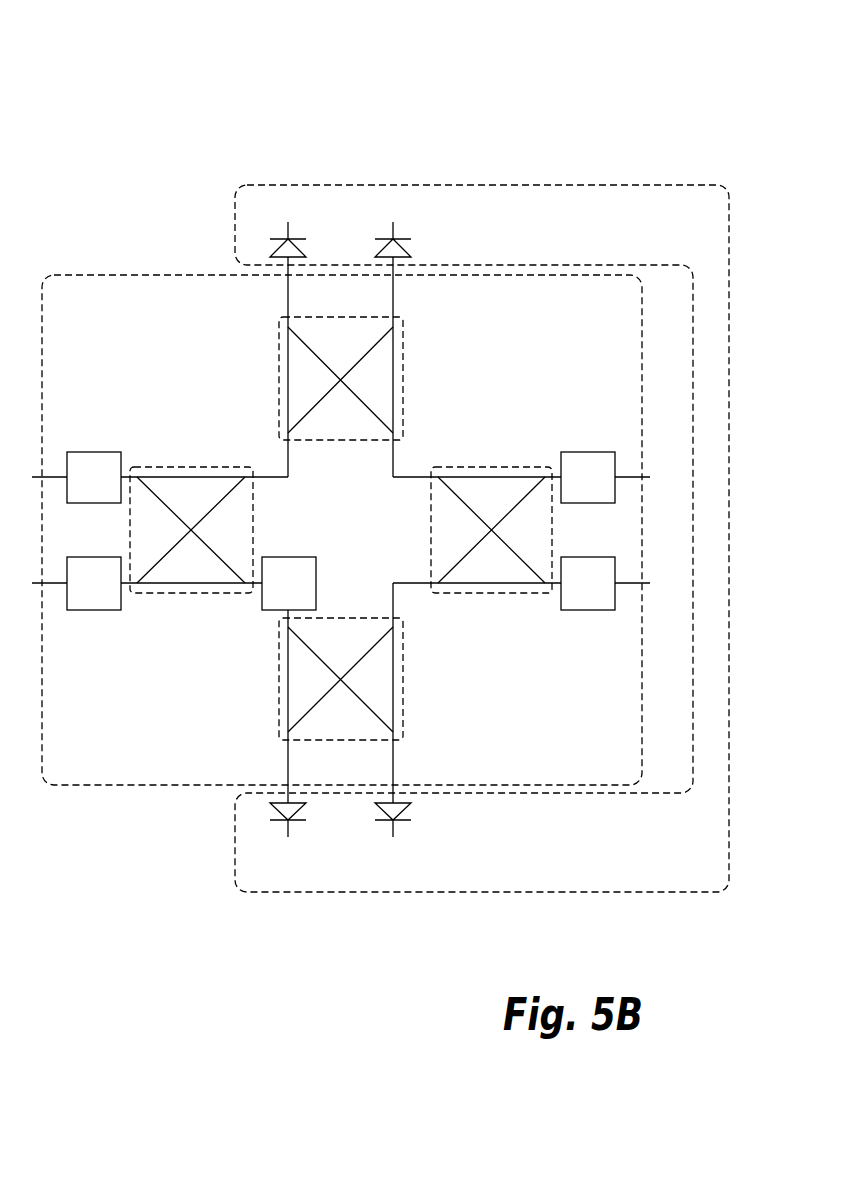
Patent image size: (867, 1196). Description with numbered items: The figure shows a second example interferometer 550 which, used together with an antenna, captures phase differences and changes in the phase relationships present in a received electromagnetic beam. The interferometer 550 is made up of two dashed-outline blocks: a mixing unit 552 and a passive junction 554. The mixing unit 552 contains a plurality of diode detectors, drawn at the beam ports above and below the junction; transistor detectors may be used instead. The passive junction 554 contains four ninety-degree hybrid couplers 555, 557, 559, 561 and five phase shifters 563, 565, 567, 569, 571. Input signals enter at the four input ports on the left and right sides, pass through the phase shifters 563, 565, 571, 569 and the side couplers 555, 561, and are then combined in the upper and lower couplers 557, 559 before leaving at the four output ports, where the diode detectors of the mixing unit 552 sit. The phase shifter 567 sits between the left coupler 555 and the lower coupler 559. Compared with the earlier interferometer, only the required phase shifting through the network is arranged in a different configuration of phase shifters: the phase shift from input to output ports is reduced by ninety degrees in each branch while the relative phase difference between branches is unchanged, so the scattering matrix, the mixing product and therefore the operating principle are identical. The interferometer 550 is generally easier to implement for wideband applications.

The interferometer 550 is at (104, 44).
The mixing unit 552 is at (304, 185).
The passive junction 554 is at (94, 274).
The 90-degree hybrid coupler 555 is at (191, 466).
The 90-degree hybrid coupler 557 is at (278, 369).
The 90-degree hybrid coupler 559 is at (278, 679).
The 90-degree hybrid coupler 561 is at (492, 466).
The phase shifter 563 is at (110, 451).
The phase shifter 565 is at (110, 556).
The phase shifter 567 is at (288, 556).
The phase shifter 569 is at (571, 556).
The phase shifter 571 is at (589, 451).